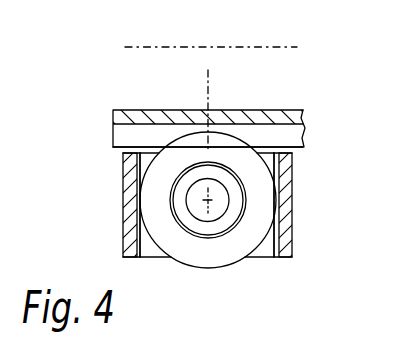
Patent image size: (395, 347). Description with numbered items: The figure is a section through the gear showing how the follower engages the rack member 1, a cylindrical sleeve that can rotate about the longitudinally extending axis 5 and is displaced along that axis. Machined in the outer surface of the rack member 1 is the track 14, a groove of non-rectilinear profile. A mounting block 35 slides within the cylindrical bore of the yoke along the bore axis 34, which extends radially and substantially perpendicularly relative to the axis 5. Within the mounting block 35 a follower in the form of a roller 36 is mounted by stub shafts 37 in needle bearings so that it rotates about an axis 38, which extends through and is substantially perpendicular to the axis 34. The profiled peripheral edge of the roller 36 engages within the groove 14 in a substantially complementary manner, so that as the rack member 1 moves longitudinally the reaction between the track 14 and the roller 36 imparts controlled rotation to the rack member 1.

The rack member 1 is at (143, 116).
The longitudinally extending axis 5 is at (247, 47).
The track 14 is at (270, 133).
The axis of the cylindrical bore 34 is at (213, 102).
The mounting block 35 is at (129, 222).
The roller 36 is at (228, 250).
The stub shafts 37 is at (228, 200).
The axis of rotation of the roller 38 is at (206, 203).